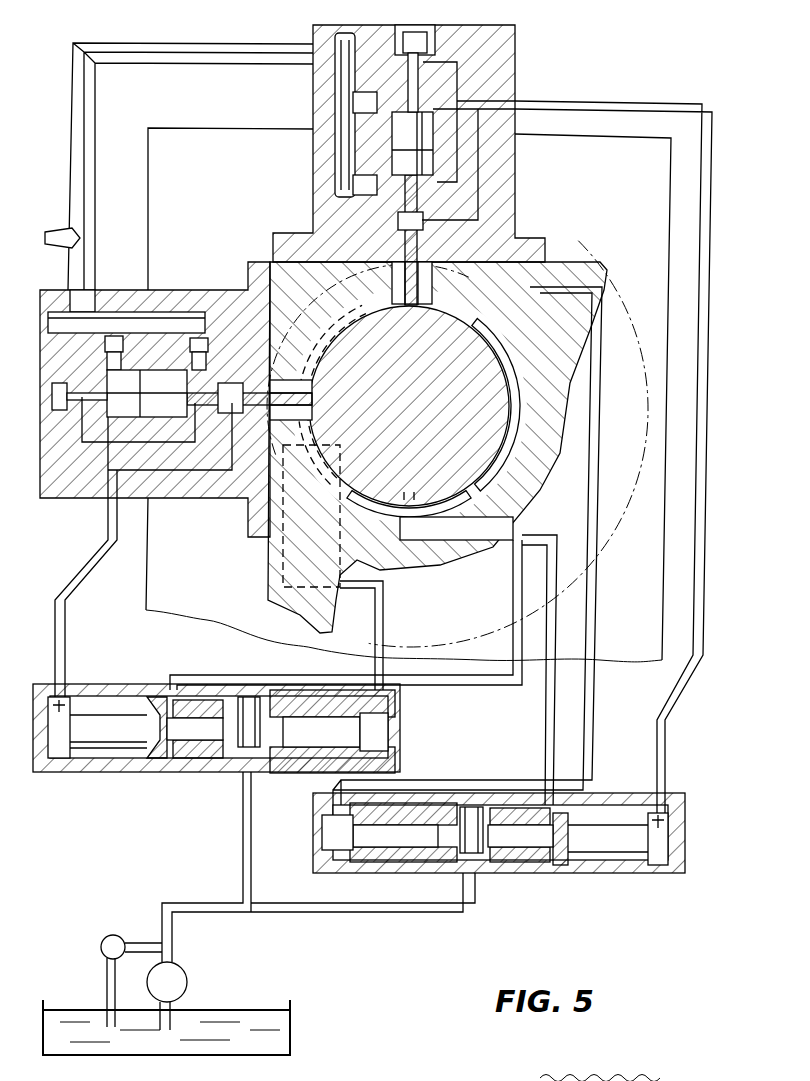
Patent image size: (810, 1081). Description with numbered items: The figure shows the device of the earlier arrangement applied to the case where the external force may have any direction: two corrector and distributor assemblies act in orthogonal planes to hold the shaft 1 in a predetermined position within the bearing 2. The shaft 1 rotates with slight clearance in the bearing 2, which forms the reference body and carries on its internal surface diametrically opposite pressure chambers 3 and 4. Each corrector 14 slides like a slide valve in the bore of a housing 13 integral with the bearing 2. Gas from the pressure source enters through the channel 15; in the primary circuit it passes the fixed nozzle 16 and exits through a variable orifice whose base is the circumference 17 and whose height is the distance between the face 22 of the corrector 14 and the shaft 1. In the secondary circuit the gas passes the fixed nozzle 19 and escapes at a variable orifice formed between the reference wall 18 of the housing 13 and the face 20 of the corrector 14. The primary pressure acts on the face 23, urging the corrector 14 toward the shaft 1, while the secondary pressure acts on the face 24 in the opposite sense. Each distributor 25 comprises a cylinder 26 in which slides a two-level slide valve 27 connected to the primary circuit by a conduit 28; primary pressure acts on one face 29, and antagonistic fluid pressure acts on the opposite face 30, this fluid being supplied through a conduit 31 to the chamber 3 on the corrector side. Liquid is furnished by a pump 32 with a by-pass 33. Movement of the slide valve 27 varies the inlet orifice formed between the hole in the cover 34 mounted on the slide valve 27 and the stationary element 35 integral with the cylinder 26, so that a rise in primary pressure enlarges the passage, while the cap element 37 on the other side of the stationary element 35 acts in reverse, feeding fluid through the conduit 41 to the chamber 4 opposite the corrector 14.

The shaft 1 is at (428, 408).
The bearing 2 is at (548, 275).
The chamber 3 is at (462, 322).
The chamber 4 is at (513, 418).
The housing 13 is at (322, 158).
The corrector 14 is at (286, 281).
The channel 15 is at (300, 60).
The nozzle 16 is at (335, 102).
The circumference 17 is at (413, 305).
The reference wall 18 is at (440, 35).
The nozzle 19 is at (335, 190).
The face of the corrector 20 is at (410, 30).
The face of the corrector 22 is at (420, 305).
The face of the corrector 23 is at (270, 264).
The face of the corrector 24 is at (398, 202).
The distributor 25 is at (45, 690).
The cylinder 26 is at (160, 773).
The slide valve 27 is at (359, 778).
The conduit 28 is at (72, 592).
The face of the slide valve 29 is at (359, 781).
The face of the slide valve 30 is at (355, 781).
The conduit 31 is at (383, 628).
The pump 32 is at (187, 982).
The by-pass 33 is at (110, 935).
The cover 34 is at (290, 773).
The stationary element 35 is at (250, 697).
The cap element 37 is at (212, 773).
The conduit 41 is at (215, 674).